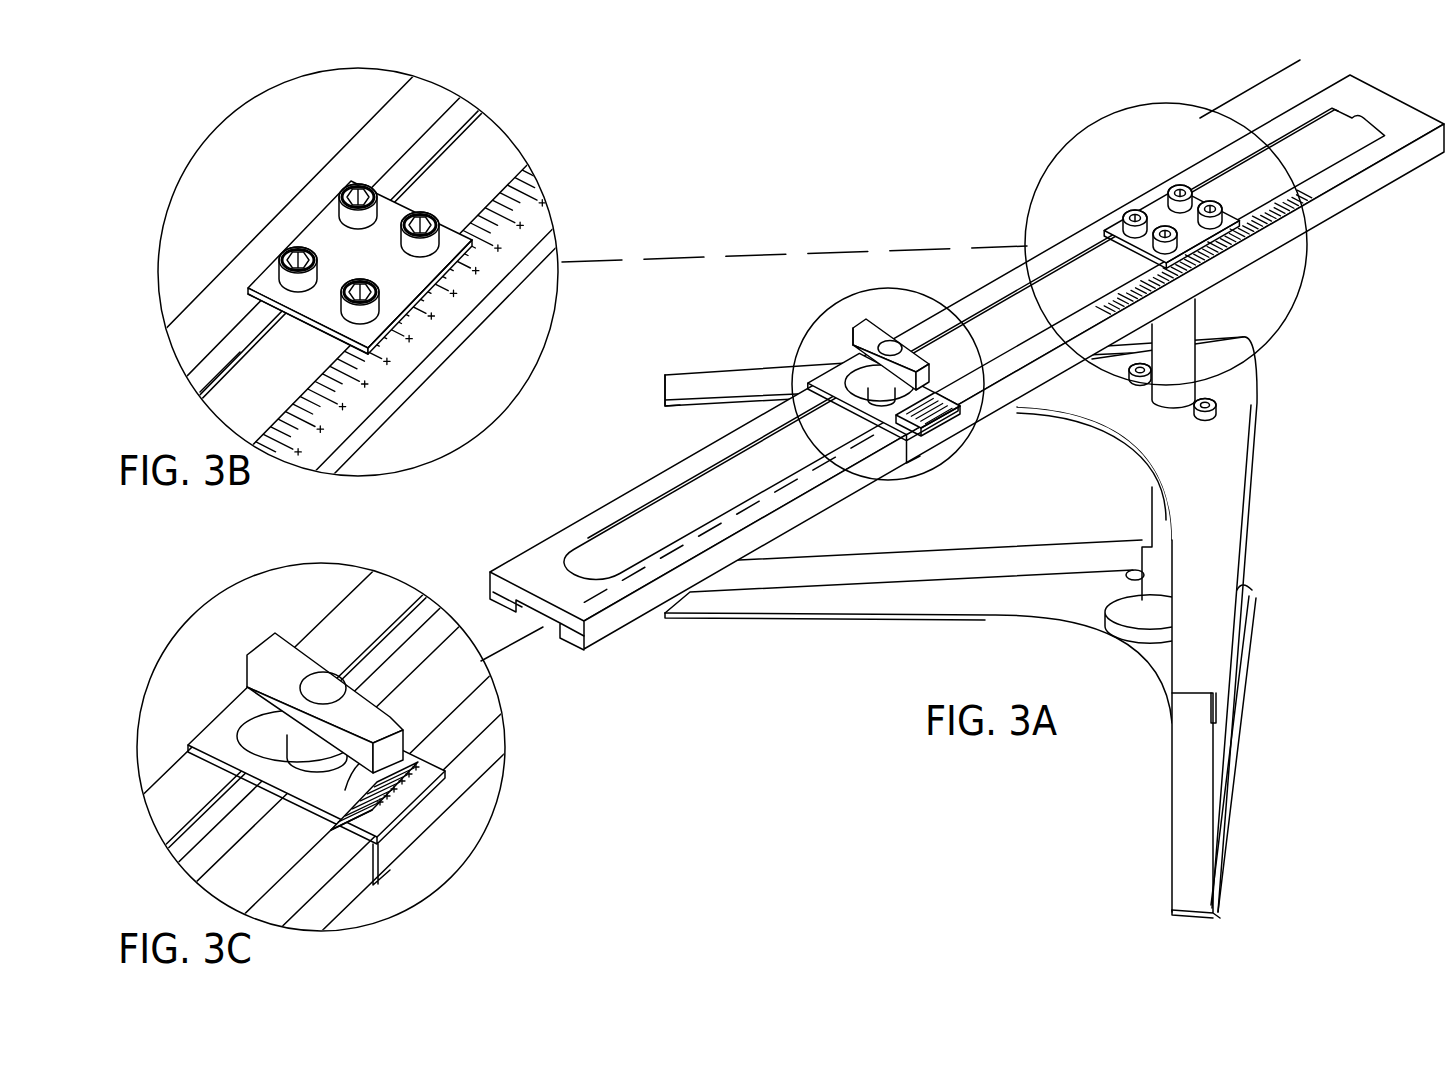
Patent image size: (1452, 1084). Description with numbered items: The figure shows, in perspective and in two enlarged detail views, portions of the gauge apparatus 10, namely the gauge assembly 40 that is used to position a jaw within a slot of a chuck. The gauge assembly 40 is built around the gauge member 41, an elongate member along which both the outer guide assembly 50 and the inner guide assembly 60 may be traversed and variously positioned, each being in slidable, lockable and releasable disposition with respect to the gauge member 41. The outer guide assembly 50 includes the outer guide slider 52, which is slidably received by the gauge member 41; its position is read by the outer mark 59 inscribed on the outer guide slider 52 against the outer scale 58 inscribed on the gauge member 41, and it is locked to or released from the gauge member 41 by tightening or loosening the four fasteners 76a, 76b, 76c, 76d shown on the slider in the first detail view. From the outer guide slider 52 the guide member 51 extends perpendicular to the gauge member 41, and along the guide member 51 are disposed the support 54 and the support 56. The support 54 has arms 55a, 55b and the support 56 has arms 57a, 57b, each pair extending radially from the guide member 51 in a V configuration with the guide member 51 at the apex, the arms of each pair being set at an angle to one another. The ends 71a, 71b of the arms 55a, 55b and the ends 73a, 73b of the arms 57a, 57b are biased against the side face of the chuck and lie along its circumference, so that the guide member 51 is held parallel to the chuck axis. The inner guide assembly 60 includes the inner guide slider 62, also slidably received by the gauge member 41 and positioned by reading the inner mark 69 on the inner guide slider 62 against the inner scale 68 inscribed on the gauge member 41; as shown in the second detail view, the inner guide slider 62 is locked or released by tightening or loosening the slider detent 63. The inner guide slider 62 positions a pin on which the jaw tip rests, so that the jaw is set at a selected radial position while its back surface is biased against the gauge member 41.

In FIG. 3A, the measuring tool assembly 10 is at (1072, 84).
In FIG. 3B, the measuring tool assembly 10 is at (226, 88).
In FIG. 3C, the measuring tool assembly 10 is at (206, 586).
In FIG. 3A, the gauge assembly 40 is at (1383, 110).
In FIG. 3B, the gauge assembly 40 is at (360, 397).
In FIG. 3A, the gauge member 41 is at (1263, 122).
In FIG. 3B, the gauge member 41 is at (228, 289).
In FIG. 3A, the outer guide assembly 50 is at (1190, 337).
In FIG. 3B, the outer guide assembly 50 is at (332, 212).
In FIG. 3A, the guide member 51 is at (1158, 512).
In FIG. 3A, the outer guide slider 52 is at (1140, 207).
In FIG. 3B, the outer guide slider 52 is at (315, 240).
In FIG. 3A, the support 54 is at (1237, 405).
In FIG. 3A, the arm 55a is at (765, 373).
In FIG. 3A, the arm 55b is at (1230, 507).
In FIG. 3A, the support 56 is at (1257, 645).
In FIG. 3A, the arm 57a is at (851, 604).
In FIG. 3A, the arm 57b is at (1183, 808).
In FIG. 3A, the outer scale 58 is at (1300, 193).
In FIG. 3B, the outer scale 58 is at (505, 247).
In FIG. 3A, the outer mark 59 is at (1228, 252).
In FIG. 3B, the outer mark 59 is at (392, 315).
In FIG. 3A, the inner guide assembly 60 is at (830, 380).
In FIG. 3C, the inner guide assembly 60 is at (468, 726).
In FIG. 3A, the inner guide slider 62 is at (843, 352).
In FIG. 3C, the inner guide slider 62 is at (446, 752).
In FIG. 3A, the slider detent 63 is at (885, 337).
In FIG. 3C, the slider detent 63 is at (295, 640).
In FIG. 3A, the inner scale 68 is at (930, 418).
In FIG. 3C, the inner scale 68 is at (415, 770).
In FIG. 3A, the inner mark 69 is at (918, 446).
In FIG. 3C, the inner mark 69 is at (392, 805).
In FIG. 3A, the end 71a is at (662, 393).
In FIG. 3A, the end 71b is at (1220, 719).
In FIG. 3A, the end 73a is at (658, 615).
In FIG. 3A, the end 73b is at (1225, 912).
In FIG. 3A, the fastener 76a is at (1172, 190).
In FIG. 3B, the fastener 76a is at (349, 194).
In FIG. 3A, the fastener 76b is at (1215, 218).
In FIG. 3B, the fastener 76b is at (421, 212).
In FIG. 3A, the fastener 76c is at (1180, 250).
In FIG. 3B, the fastener 76c is at (412, 295).
In FIG. 3A, the fastener 76d is at (1128, 218).
In FIG. 3B, the fastener 76d is at (286, 262).